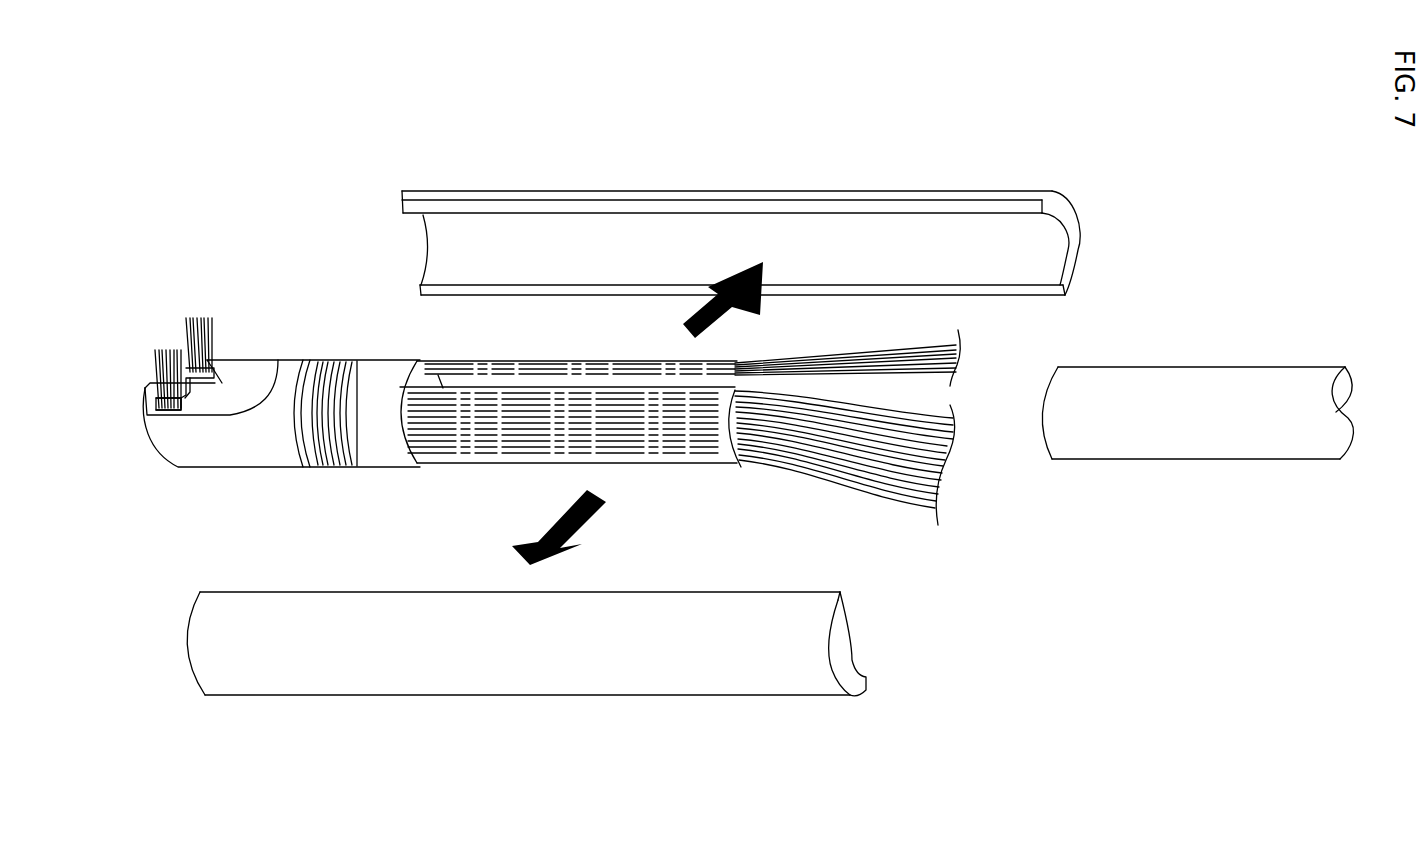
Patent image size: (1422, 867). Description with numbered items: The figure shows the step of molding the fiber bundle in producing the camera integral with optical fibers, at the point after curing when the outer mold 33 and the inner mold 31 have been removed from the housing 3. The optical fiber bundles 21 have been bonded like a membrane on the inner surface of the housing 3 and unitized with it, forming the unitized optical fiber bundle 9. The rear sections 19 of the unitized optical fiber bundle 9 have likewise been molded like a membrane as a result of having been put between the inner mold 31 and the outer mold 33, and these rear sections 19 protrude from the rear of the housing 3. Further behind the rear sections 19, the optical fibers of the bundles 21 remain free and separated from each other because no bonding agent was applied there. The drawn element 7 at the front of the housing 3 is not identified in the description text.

The housing 3 is at (186, 450).
The terminal accommodating portion 7 is at (165, 400).
The unitized optical fiber bundle 9 is at (440, 354).
The rear section 19 is at (515, 368).
The optical fiber bundle 21 is at (186, 330).
The inner mold 31 is at (1197, 448).
The outer mold 33 is at (933, 191).